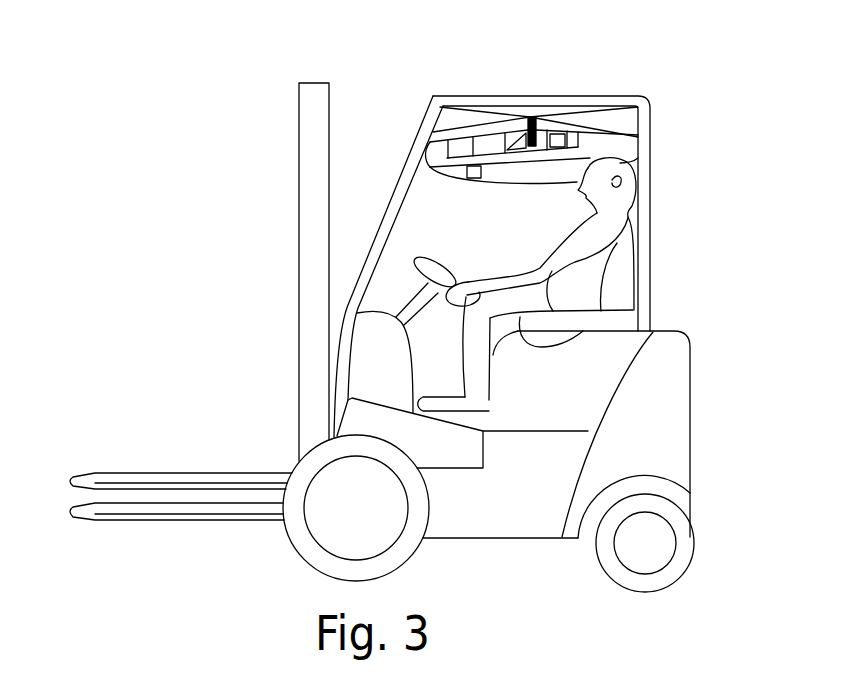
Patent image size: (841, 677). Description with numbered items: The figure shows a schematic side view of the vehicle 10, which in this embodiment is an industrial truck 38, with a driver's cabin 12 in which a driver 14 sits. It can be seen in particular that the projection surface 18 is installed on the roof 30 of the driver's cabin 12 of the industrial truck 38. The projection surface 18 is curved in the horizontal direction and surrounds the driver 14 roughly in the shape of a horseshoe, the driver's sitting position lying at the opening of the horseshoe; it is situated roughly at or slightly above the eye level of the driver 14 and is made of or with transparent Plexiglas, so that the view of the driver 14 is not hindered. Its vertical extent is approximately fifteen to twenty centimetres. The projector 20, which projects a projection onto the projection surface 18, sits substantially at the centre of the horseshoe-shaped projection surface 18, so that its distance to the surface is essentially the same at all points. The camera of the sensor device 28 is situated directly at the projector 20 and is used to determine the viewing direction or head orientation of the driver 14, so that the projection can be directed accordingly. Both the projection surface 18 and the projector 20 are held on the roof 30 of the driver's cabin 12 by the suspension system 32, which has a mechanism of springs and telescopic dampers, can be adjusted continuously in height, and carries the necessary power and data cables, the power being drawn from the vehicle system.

The vehicle 10 is at (399, 313).
The industrial truck 38 is at (241, 557).
The driver's cabin 12 is at (420, 132).
The driver 14 is at (597, 266).
The projection surface 18 is at (628, 152).
The projector 20 is at (532, 96).
The sensor device 28 is at (528, 120).
The roof 30 is at (612, 97).
The suspension system 32 is at (573, 110).